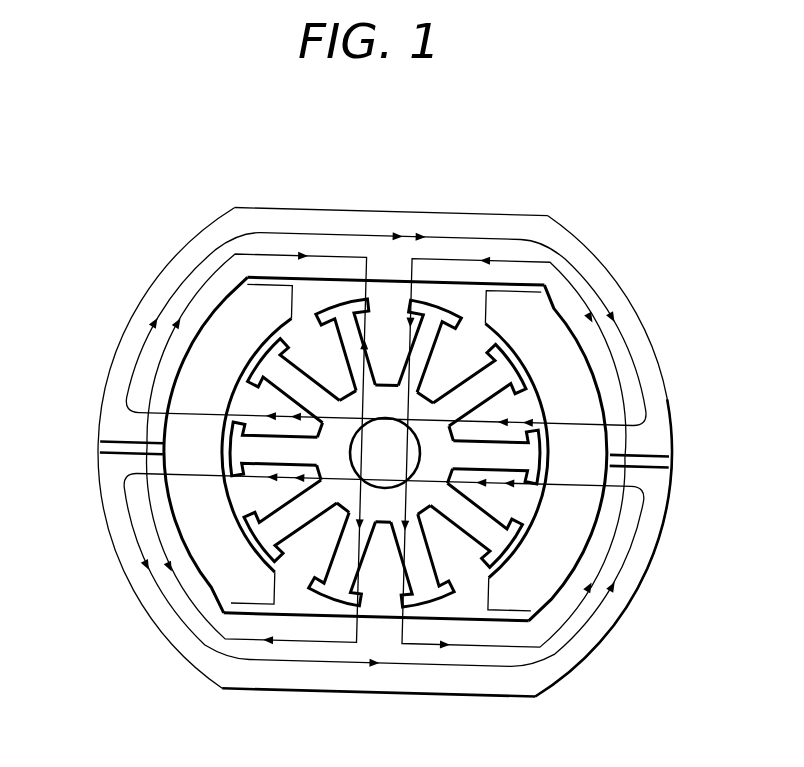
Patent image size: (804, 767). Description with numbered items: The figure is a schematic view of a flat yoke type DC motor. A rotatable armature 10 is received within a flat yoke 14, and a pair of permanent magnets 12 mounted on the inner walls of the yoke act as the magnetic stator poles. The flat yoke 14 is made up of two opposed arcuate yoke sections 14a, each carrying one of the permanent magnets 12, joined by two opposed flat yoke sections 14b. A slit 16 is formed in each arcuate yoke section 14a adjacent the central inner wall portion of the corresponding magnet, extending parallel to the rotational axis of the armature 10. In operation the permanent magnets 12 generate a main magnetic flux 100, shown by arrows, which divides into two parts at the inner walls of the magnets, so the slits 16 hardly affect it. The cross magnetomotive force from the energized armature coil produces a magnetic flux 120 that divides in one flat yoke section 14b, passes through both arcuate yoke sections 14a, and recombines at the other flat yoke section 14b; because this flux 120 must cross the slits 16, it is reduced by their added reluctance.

The rotatable armature 10 is at (336, 590).
The permanent magnet 12 is at (222, 328).
The flat yoke 14 is at (382, 454).
The arcuate yoke section 14a is at (120, 344).
The flat yoke section 14b is at (428, 210).
The slit 16 is at (103, 444).
The main magnetic flux 100 is at (343, 232).
The magnetic flux 120 is at (257, 254).